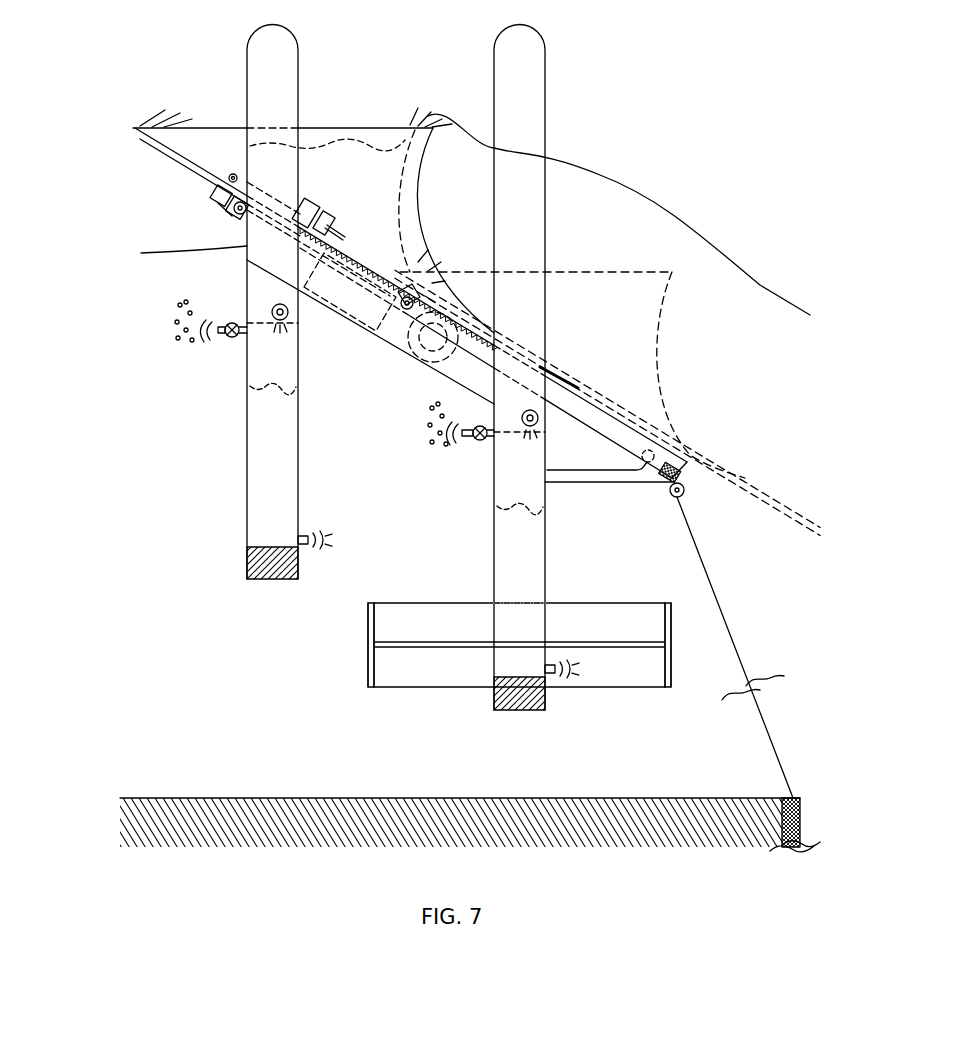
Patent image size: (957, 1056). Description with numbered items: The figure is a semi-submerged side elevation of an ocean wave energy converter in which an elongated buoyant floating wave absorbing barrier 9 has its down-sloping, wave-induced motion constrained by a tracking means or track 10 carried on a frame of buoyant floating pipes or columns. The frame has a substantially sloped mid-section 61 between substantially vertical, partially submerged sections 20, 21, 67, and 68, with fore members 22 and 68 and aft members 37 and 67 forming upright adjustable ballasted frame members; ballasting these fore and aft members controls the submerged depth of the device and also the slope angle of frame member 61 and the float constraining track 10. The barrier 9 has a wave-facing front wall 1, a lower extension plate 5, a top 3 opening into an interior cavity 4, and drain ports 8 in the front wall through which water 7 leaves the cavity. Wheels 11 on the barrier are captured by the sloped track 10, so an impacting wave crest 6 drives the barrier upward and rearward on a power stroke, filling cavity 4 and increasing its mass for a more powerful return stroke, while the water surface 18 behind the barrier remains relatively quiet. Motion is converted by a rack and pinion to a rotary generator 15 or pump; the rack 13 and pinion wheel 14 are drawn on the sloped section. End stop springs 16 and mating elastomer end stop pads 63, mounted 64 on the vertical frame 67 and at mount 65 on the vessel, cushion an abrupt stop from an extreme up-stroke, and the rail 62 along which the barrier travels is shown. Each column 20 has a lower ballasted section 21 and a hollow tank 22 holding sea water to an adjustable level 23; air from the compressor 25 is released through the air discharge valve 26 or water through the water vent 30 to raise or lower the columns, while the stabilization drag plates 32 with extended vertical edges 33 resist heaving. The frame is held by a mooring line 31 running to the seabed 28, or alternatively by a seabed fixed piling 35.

The front wall 1 is at (414, 190).
The top 3 is at (210, 127).
The open vessel interior volume 4 is at (333, 155).
The extension plate 5 is at (512, 343).
The wave crest 6 is at (598, 172).
The water 7 is at (370, 146).
The drain ports 8 is at (435, 269).
The elongated buoyant barrier 9 is at (398, 222).
The track 10 is at (247, 250).
The wheels 11 is at (230, 212).
The rack 13 is at (422, 358).
The drive wheel 14 is at (410, 342).
The generator 15 is at (330, 300).
The end stop springs 16 is at (212, 196).
The water surface 18 is at (152, 254).
The buoyancy mounting column 20 is at (494, 467).
The lower section 21 is at (290, 572).
The ballast tank 22 is at (546, 570).
The adjustable water level 23 is at (298, 389).
The air compressor 25 is at (272, 309).
The air discharge valve 26 is at (478, 428).
The seabed 28 is at (606, 797).
The water vent 30 is at (312, 536).
The mooring line 31 is at (712, 567).
The stabilization drag plate 32 is at (603, 640).
The extended vertical edges 33 is at (376, 622).
The seabed fixed piling 35 is at (793, 797).
The aft upright frame member 37 is at (247, 359).
The sloped mid-section 61 is at (363, 340).
The rail 62 is at (162, 140).
The elastomer end stop pads 63 is at (330, 220).
The mount 64 is at (306, 208).
The mount 65 is at (346, 230).
The vertical frame section 67 is at (247, 62).
The vertical frame section 68 is at (546, 87).